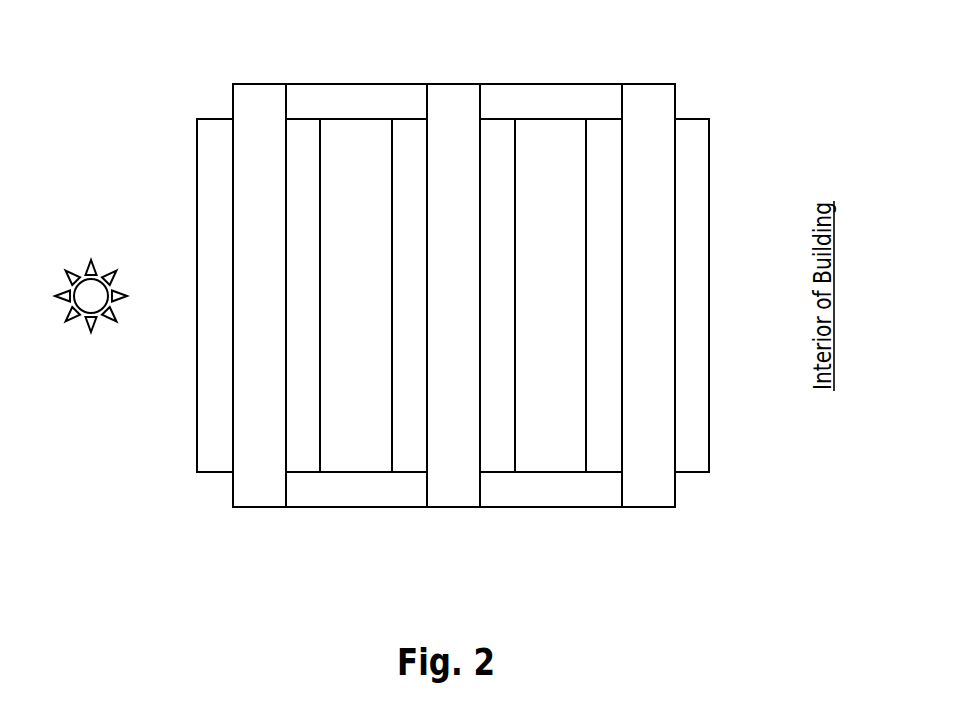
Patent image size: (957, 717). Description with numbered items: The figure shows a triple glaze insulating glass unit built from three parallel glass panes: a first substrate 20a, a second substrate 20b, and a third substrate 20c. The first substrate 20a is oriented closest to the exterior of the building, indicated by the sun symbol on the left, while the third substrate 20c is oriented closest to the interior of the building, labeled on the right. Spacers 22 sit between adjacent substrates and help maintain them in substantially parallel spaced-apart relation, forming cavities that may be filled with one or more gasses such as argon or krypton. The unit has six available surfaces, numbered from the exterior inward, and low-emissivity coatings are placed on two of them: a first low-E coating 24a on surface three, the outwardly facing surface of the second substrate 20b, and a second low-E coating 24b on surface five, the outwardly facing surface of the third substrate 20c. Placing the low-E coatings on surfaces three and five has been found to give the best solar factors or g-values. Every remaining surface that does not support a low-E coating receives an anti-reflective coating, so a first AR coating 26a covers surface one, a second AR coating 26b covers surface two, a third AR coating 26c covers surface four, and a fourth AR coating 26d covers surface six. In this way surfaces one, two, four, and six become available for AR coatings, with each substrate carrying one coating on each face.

The first substrate 20a is at (259, 84).
The second substrate 20b is at (453, 84).
The third substrate 20c is at (647, 84).
The spacers 22 is at (357, 84).
The first low-E coating 24a is at (409, 445).
The second low-E coating 24b is at (604, 445).
The first AR coating 26a is at (215, 445).
The second AR coating 26b is at (303, 445).
The third AR coating 26c is at (498, 445).
The fourth AR coating 26d is at (692, 445).